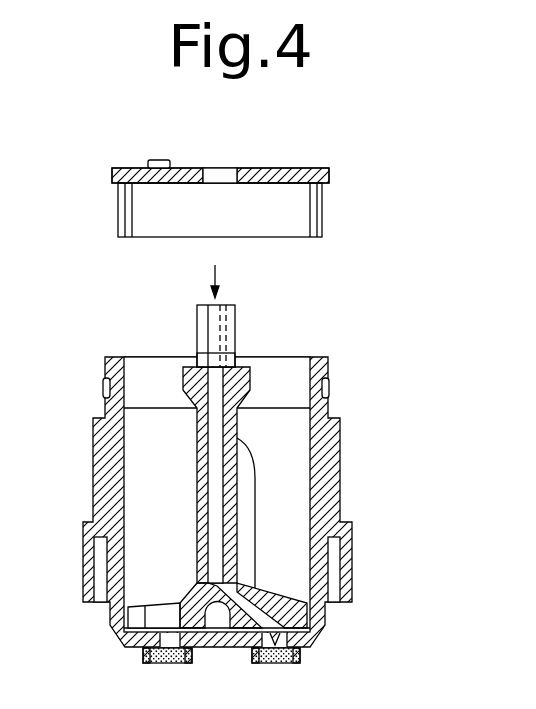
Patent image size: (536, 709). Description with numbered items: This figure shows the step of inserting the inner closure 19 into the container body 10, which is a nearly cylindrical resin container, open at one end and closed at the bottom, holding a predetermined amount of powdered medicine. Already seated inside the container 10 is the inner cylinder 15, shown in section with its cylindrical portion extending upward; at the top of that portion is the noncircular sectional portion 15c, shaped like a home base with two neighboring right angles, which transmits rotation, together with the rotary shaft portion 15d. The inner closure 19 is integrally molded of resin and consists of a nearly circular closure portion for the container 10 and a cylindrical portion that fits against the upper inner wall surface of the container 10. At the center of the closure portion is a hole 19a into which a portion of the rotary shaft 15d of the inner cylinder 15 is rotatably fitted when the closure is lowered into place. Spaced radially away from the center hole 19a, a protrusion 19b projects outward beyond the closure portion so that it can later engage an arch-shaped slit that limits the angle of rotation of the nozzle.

The container body 10 is at (348, 409).
The inner cylinder 15 is at (254, 462).
The sectional portion 15c is at (235, 322).
The rotary shaft portion 15d is at (197, 355).
The inner closure 19 is at (210, 200).
The hole 19a is at (223, 168).
The protrusion 19b is at (160, 160).